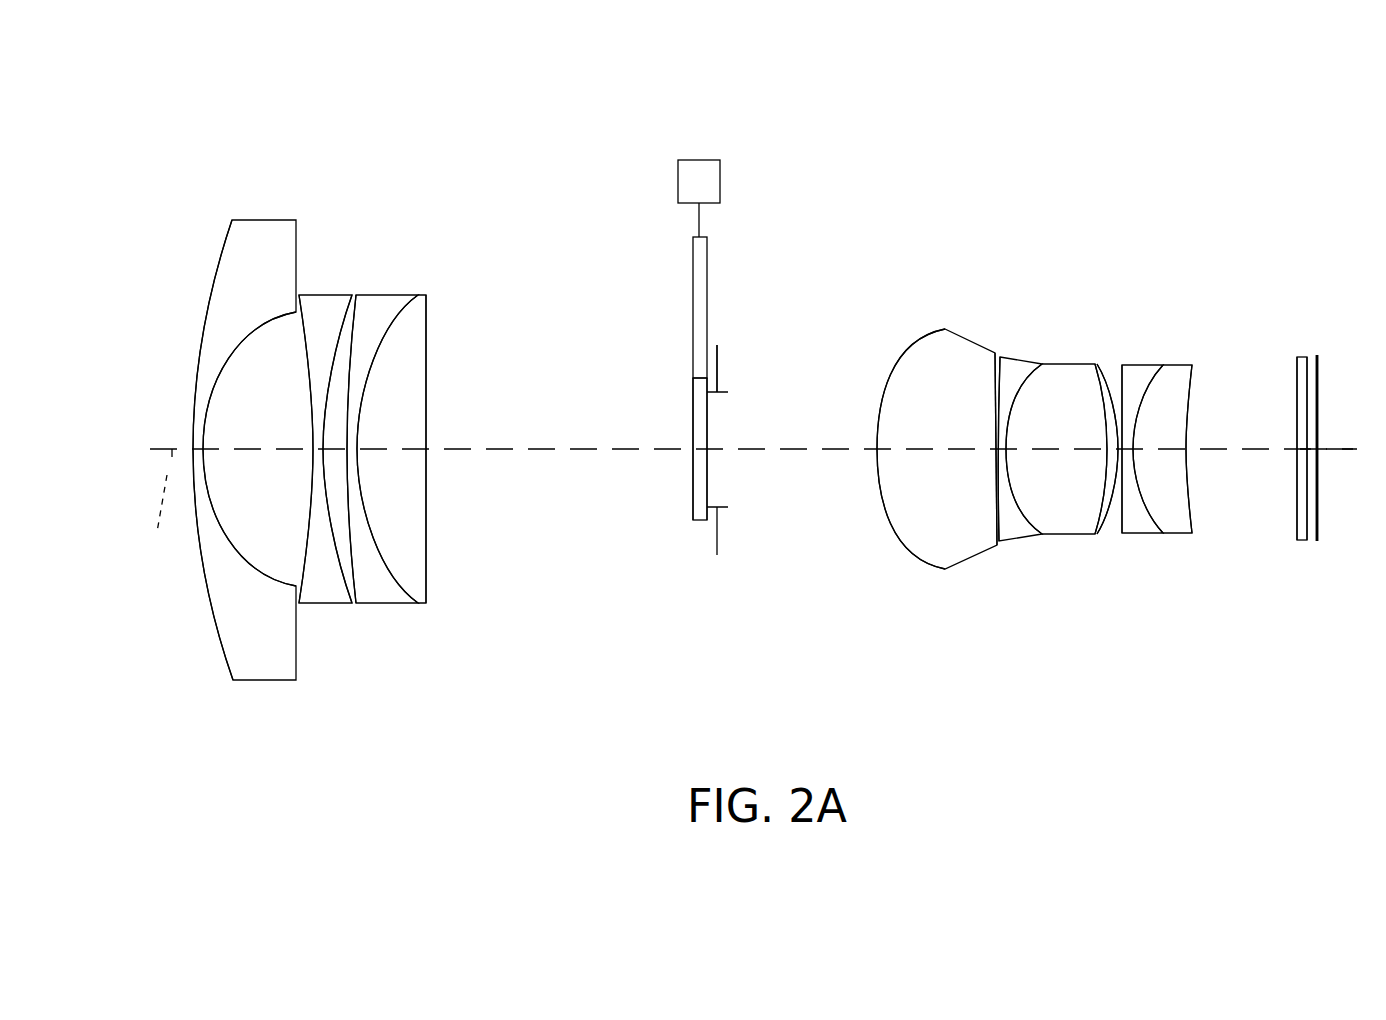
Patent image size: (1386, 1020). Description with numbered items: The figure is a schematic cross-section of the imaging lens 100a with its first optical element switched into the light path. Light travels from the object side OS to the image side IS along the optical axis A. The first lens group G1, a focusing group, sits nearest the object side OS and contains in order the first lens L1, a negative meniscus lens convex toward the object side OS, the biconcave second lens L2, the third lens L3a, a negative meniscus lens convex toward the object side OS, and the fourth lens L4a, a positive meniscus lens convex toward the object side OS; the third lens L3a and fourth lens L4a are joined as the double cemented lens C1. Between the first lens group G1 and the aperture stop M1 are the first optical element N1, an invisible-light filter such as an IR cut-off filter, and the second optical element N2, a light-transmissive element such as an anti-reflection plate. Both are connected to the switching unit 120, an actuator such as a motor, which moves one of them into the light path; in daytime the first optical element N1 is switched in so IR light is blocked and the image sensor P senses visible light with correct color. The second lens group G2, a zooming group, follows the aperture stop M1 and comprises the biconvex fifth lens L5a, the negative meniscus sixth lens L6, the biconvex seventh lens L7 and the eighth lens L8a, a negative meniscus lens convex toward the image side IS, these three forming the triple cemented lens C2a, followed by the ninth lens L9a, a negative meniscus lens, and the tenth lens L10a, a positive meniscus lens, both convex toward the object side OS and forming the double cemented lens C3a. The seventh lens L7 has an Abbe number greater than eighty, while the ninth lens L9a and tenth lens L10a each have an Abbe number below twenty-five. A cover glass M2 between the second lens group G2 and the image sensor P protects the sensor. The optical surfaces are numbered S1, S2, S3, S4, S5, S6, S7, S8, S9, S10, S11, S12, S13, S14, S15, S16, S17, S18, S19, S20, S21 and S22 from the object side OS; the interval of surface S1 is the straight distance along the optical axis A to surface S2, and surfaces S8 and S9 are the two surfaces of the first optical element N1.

The imaging lens 100a is at (1350, 718).
The switching unit 120 is at (700, 168).
The first lens group G1 is at (308, 477).
The second lens group G2 is at (1055, 478).
The first lens L1 is at (227, 451).
The second lens L2 is at (306, 451).
The third lens L3a is at (382, 447).
The fourth lens L4a is at (436, 461).
The cemented lens C1 is at (406, 470).
The fifth lens L5a is at (944, 451).
The sixth lens L6 is at (1028, 433).
The seventh lens L7 is at (1074, 436).
The eighth lens L8a is at (1106, 456).
The ninth lens L9a is at (1159, 437).
The tenth lens L10a is at (1198, 437).
The cemented lens C2a is at (1063, 455).
The cemented lens C3a is at (1178, 459).
The first optical element N1 is at (697, 485).
The second optical element N2 is at (695, 292).
The aperture stop M1 is at (720, 540).
The cover glass M2 is at (1303, 538).
The image sensor P is at (1320, 504).
The optical axis A is at (159, 523).
The object side OS is at (736, 452).
The image side IS is at (1343, 450).
The surface S1 is at (210, 295).
The surface S2 is at (258, 332).
The surface S3 is at (300, 340).
The surface S4 is at (340, 337).
The surface S5 is at (353, 335).
The surface S6 is at (395, 317).
The surface S7 is at (428, 335).
The surface S8 is at (693, 420).
The surface S9 is at (708, 432).
The surface S10 is at (718, 358).
The surface S11 is at (907, 357).
The surface S12 is at (993, 392).
The surface S13 is at (999, 385).
The surface S14 is at (1018, 396).
The surface S15 is at (1085, 395).
The surface S16 is at (1104, 380).
The surface S17 is at (1127, 383).
The surface S18 is at (1153, 388).
The surface S19 is at (1193, 395).
The surface S20 is at (1295, 386).
The surface S21 is at (1309, 377).
The surface S22 is at (1320, 404).